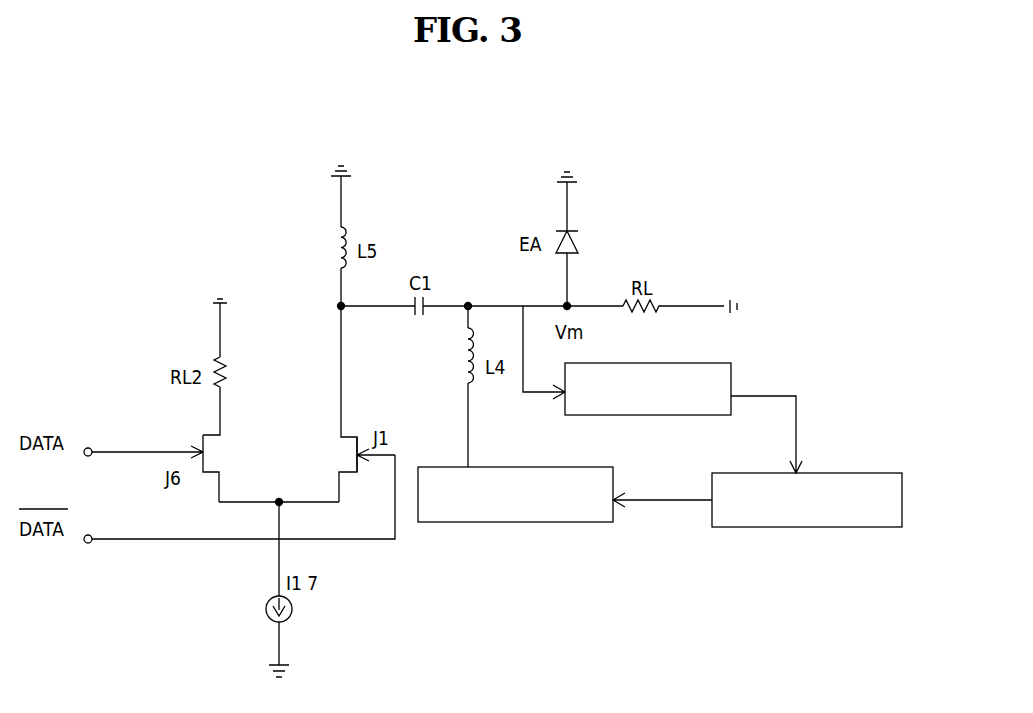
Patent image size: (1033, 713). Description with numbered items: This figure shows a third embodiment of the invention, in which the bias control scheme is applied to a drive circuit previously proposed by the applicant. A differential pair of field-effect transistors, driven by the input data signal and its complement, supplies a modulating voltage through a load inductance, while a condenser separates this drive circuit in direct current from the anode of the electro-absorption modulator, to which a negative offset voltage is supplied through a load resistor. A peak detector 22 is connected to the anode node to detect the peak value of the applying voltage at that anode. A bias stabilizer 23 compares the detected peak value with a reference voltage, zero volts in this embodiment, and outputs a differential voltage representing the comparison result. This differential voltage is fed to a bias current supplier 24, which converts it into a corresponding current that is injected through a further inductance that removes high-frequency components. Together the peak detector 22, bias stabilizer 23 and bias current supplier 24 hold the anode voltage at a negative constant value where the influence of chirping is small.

The peak detector 22 is at (730, 372).
The bias stabilizer 23 is at (872, 473).
The bias current supplier 24 is at (536, 522).